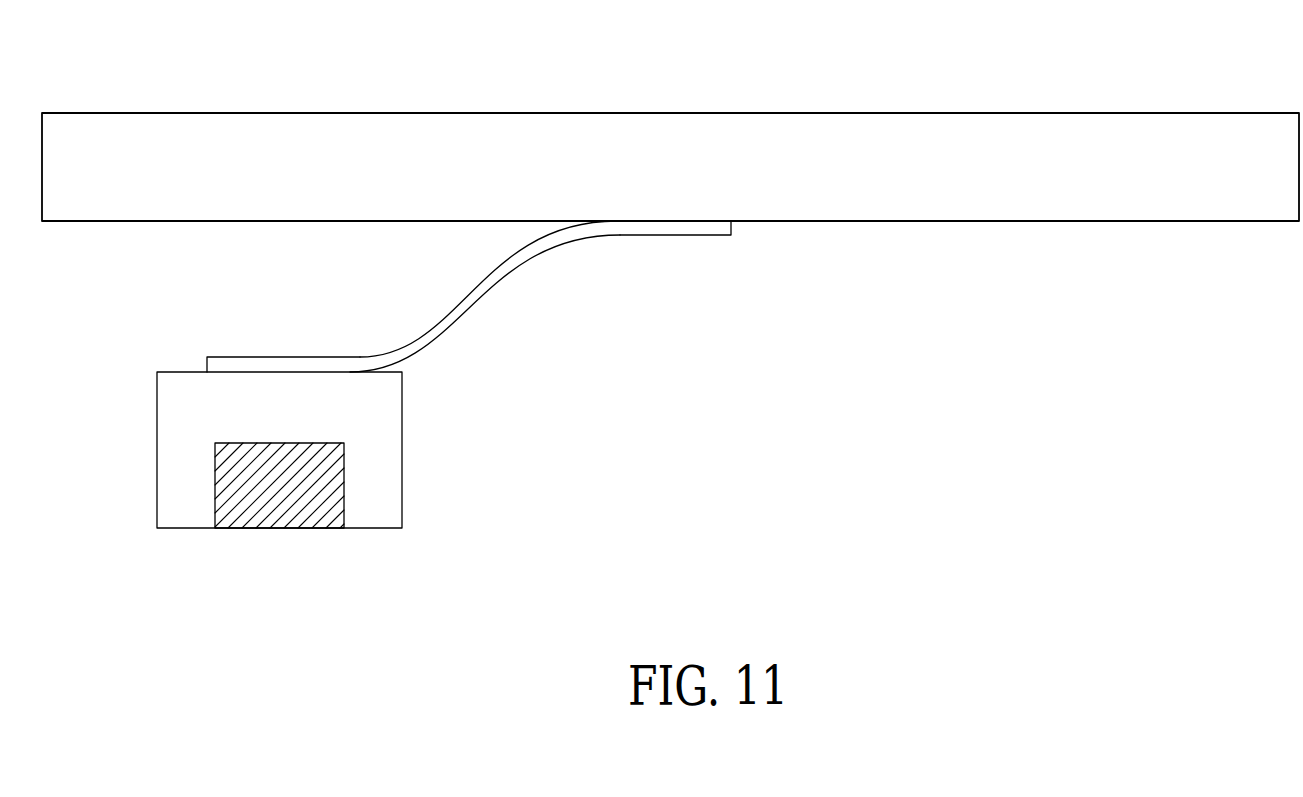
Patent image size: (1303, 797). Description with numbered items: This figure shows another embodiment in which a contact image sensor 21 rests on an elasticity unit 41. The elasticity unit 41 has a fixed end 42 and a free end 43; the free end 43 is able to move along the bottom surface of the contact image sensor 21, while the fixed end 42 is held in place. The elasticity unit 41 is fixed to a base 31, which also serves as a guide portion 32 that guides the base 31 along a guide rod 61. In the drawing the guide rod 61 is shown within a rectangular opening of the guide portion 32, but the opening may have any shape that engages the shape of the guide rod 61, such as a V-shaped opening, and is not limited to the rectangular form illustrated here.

The contact image sensor 21 is at (750, 149).
The elasticity unit 41 is at (482, 295).
The fixed end 42 is at (228, 365).
The free end 43 is at (700, 228).
The base 31 is at (370, 454).
The guide portion 32 is at (388, 470).
The guide rod 61 is at (287, 492).